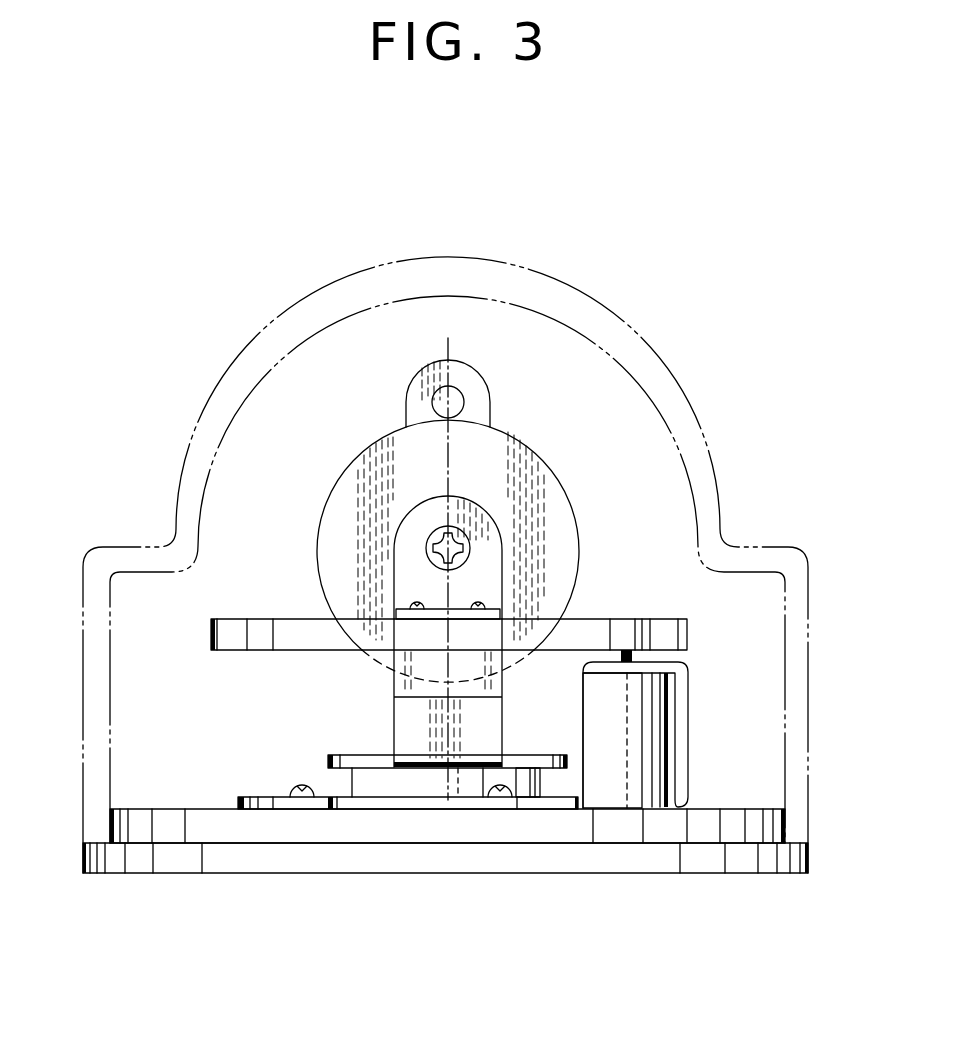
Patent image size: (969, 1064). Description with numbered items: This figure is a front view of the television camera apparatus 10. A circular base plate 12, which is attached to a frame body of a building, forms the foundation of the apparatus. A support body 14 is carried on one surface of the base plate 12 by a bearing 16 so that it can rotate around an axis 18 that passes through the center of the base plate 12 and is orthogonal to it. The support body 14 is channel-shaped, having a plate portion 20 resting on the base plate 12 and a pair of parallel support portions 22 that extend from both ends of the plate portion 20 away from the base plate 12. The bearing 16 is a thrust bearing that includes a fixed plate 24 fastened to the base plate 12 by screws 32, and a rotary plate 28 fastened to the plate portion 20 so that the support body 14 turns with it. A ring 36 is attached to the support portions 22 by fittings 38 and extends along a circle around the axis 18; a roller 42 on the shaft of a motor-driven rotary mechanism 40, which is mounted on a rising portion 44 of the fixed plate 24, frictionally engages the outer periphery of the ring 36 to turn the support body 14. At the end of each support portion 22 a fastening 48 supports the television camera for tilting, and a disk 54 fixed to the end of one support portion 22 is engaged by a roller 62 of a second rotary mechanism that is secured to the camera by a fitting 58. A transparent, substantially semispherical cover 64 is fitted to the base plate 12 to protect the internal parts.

The television camera apparatus 10 is at (576, 280).
The base plate 12 is at (571, 858).
The support body 14 is at (322, 758).
The bearing 16 is at (371, 826).
The axis 18 is at (452, 456).
The plate portion 20 is at (372, 760).
The support portions 22 is at (396, 554).
The fixed plate 24 is at (270, 808).
The rotary plate 28 is at (446, 790).
The screws 32 is at (300, 786).
The ring 36 is at (211, 638).
The fittings 38 is at (396, 612).
The rotary mechanism 40 is at (660, 735).
The roller 42 is at (630, 620).
The rising portion 44 is at (690, 684).
The fastening 48 is at (432, 540).
The disk 54 is at (565, 512).
The fitting 58 is at (470, 373).
The roller 62 is at (464, 400).
The cover 64 is at (497, 288).